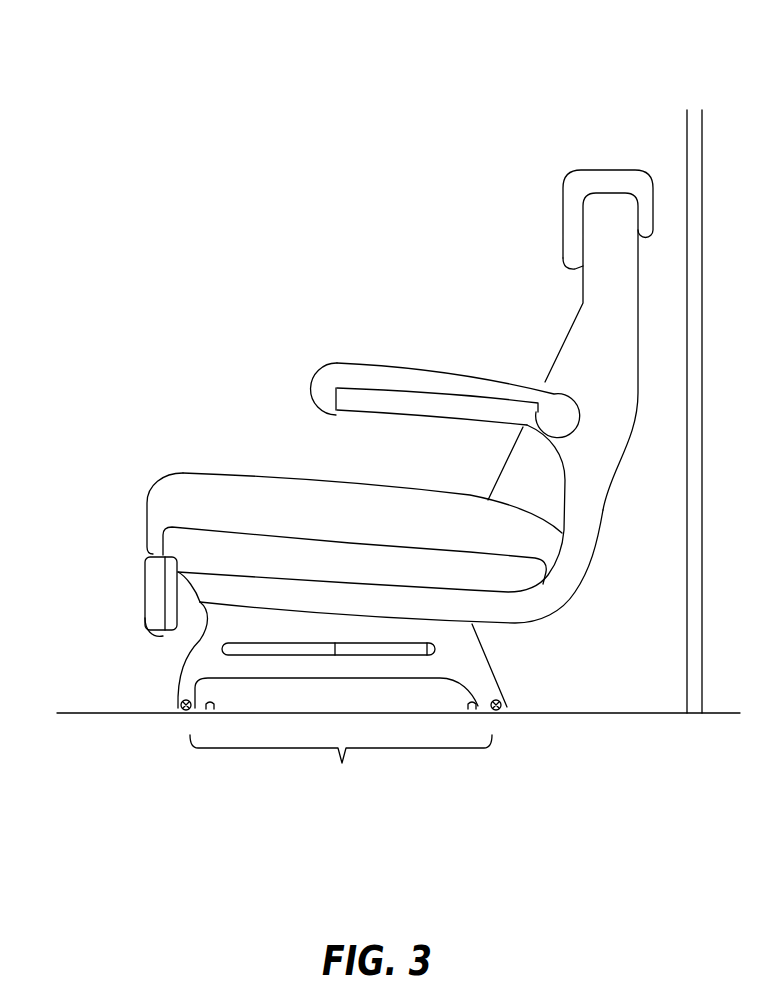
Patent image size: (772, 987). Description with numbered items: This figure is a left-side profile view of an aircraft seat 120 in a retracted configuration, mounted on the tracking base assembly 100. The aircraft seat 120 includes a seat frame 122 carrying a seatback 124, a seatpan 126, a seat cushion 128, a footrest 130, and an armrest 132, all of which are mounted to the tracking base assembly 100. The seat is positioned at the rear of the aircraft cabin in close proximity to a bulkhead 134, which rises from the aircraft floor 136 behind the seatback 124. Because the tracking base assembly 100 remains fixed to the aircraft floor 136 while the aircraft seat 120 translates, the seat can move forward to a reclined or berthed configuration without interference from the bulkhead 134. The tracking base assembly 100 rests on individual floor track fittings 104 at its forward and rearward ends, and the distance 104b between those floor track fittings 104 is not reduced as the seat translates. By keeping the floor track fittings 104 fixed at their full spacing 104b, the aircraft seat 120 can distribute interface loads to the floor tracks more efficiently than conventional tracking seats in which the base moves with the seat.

The aircraft seat 120 is at (67, 86).
The bulkhead 134 is at (690, 178).
The aircraft floor 136 is at (130, 715).
The seatback 124 is at (578, 348).
The armrest 132 is at (343, 378).
The seat cushion 128 is at (233, 492).
The seatpan 126 is at (187, 545).
The footrest 130 is at (158, 622).
The seat frame 122 is at (537, 613).
The tracking base assembly 100 is at (470, 652).
The floor track fittings 104 is at (497, 713).
The distance between floor track fittings 104b is at (341, 769).